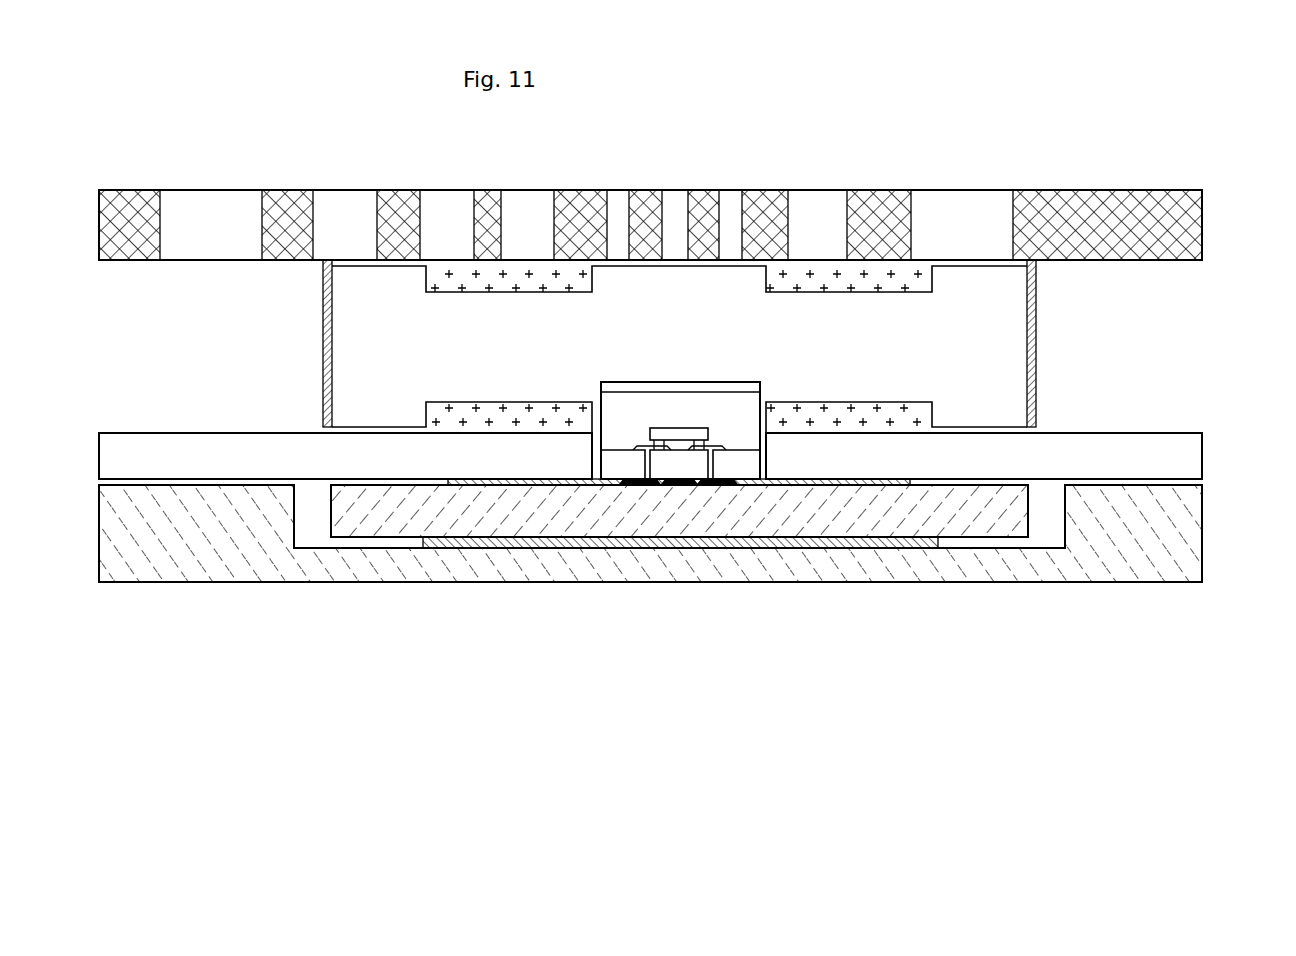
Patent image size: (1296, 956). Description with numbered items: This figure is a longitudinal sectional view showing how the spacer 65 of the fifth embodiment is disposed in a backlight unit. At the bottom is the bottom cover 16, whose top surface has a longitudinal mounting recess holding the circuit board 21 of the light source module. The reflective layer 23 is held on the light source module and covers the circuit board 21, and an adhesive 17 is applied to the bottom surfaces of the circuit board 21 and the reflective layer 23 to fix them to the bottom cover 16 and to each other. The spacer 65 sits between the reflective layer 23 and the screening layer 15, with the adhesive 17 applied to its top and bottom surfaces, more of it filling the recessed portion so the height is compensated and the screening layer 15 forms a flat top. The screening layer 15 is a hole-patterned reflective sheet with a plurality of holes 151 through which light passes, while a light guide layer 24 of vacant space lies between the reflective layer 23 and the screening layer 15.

The screening layer 15 is at (1185, 226).
The holes 151 is at (982, 225).
The spacer 65 is at (1036, 320).
The light guide layer 24 is at (1165, 338).
The reflective layer 23 is at (1183, 457).
The bottom cover 16 is at (1183, 530).
The adhesive 17 is at (847, 485).
The circuit board 21 is at (988, 520).